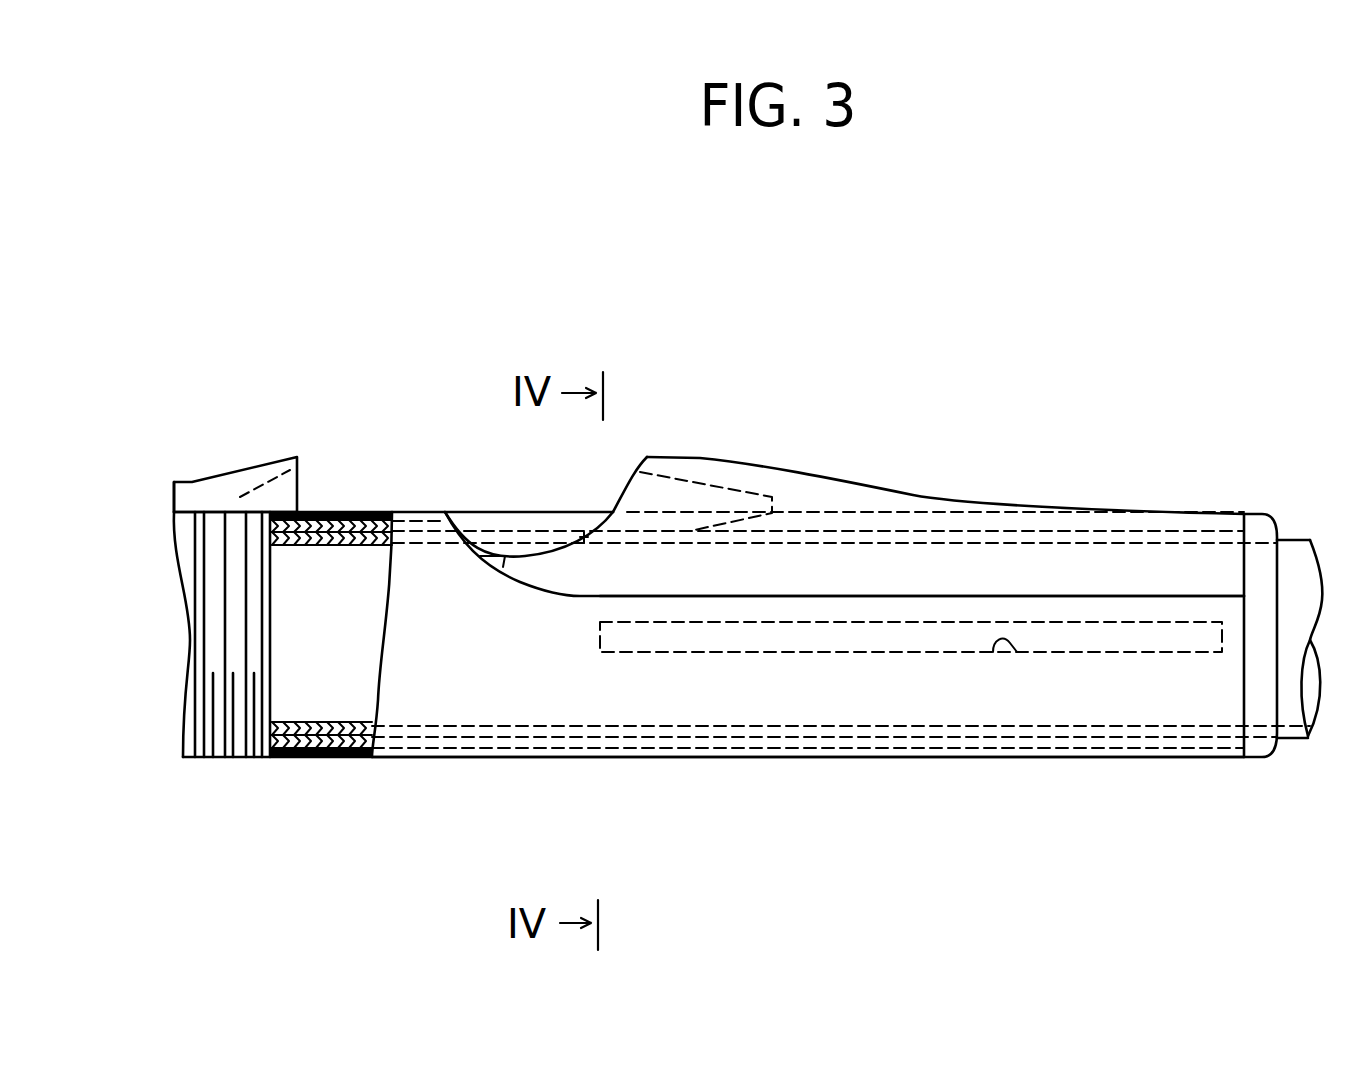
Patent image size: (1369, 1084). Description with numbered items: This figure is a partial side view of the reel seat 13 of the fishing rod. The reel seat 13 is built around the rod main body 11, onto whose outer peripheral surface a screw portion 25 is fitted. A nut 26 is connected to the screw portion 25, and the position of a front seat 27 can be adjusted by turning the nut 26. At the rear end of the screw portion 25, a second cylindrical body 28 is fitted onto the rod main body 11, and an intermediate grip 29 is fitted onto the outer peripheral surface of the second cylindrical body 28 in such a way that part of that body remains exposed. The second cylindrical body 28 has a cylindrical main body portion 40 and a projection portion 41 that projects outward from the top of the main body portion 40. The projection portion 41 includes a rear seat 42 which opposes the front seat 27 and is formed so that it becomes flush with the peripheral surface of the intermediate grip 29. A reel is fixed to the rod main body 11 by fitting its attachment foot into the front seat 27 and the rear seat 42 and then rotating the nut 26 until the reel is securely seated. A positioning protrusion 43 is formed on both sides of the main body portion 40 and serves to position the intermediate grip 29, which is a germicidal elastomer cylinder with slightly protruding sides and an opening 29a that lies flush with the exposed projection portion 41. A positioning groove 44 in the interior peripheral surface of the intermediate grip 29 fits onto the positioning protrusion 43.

The rod main body 11 is at (330, 722).
The reel seat 13 is at (652, 372).
The screw portion 25 is at (212, 758).
The nut 26 is at (183, 493).
The front seat 27 is at (240, 497).
The second cylindrical body 28 is at (861, 472).
The intermediate grip 29 is at (620, 777).
The opening 29a is at (847, 596).
The main body portion 40 is at (1025, 537).
The projection portion 41 is at (790, 512).
The rear seat 42 is at (633, 470).
The positioning protrusion 43 is at (937, 652).
The positioning groove 44 is at (993, 652).